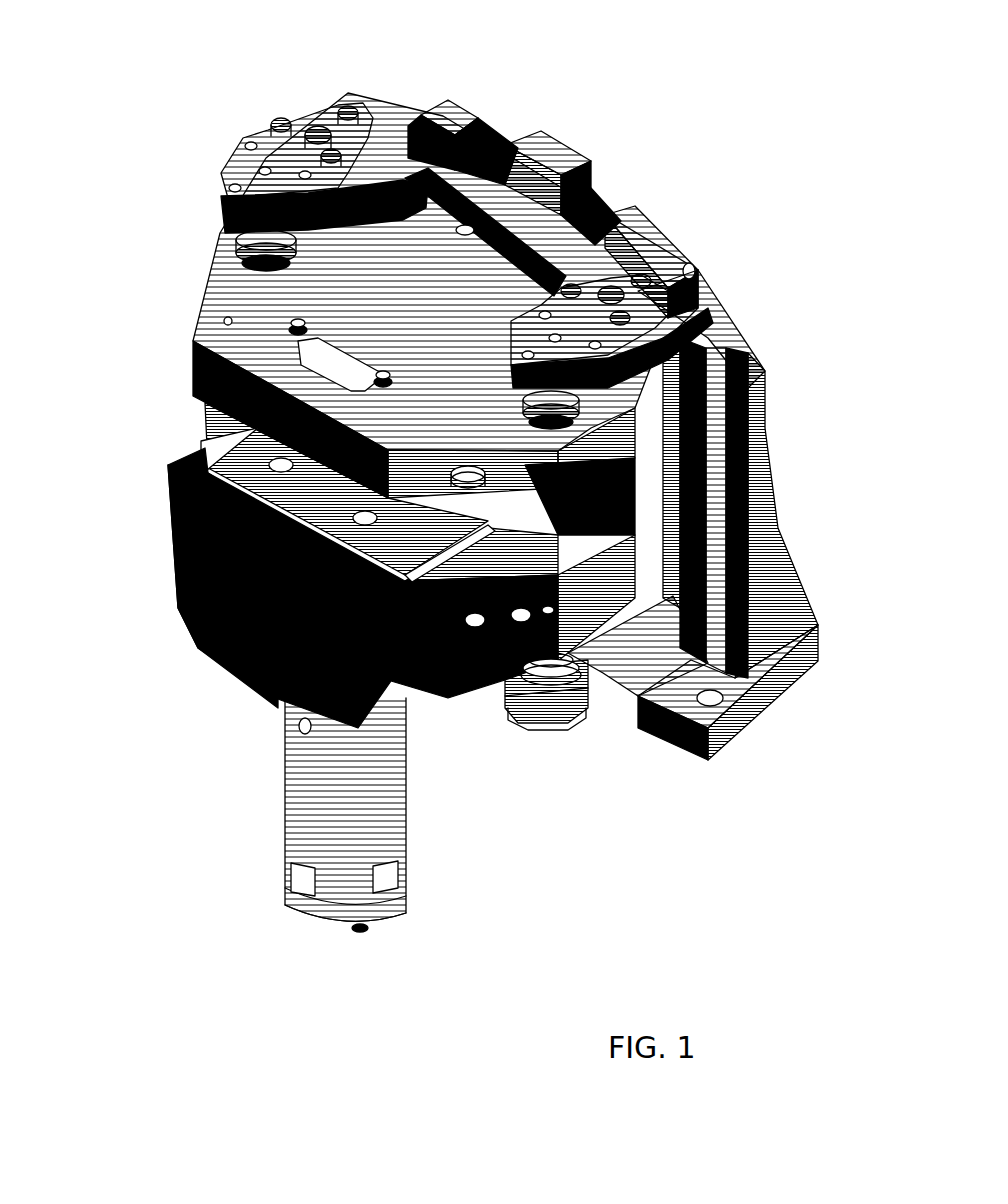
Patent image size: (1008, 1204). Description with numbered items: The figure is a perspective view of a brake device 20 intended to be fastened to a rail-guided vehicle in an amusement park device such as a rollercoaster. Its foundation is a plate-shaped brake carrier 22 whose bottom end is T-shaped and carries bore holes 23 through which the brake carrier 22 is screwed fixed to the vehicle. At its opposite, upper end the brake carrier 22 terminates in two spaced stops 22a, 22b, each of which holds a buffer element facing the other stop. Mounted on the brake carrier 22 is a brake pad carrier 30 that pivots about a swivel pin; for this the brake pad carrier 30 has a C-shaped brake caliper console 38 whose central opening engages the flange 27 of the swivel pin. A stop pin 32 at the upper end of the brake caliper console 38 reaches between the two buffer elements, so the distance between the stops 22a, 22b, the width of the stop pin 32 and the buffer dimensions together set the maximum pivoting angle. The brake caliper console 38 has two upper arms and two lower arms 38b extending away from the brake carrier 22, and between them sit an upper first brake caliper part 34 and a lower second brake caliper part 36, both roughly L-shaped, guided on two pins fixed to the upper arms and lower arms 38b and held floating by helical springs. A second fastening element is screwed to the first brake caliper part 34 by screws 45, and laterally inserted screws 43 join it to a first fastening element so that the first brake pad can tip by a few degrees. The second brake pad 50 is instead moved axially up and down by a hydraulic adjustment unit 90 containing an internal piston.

The brake device 20 is at (800, 182).
The brake carrier 22 is at (765, 593).
The stop 22a is at (632, 202).
The stop 22b is at (453, 93).
The bore holes 23 is at (705, 693).
The flange 27 is at (690, 272).
The brake pad carrier 30 is at (142, 274).
The stop pin 32 is at (553, 137).
The first brake caliper part 34 is at (218, 318).
The second brake caliper part 36 is at (455, 655).
The brake caliper console 38 is at (617, 673).
The lower arms 38b is at (537, 713).
The screws 43 is at (458, 478).
The screws 45 is at (372, 368).
The second brake pad 50 is at (205, 502).
The adjustment unit 90 is at (298, 822).